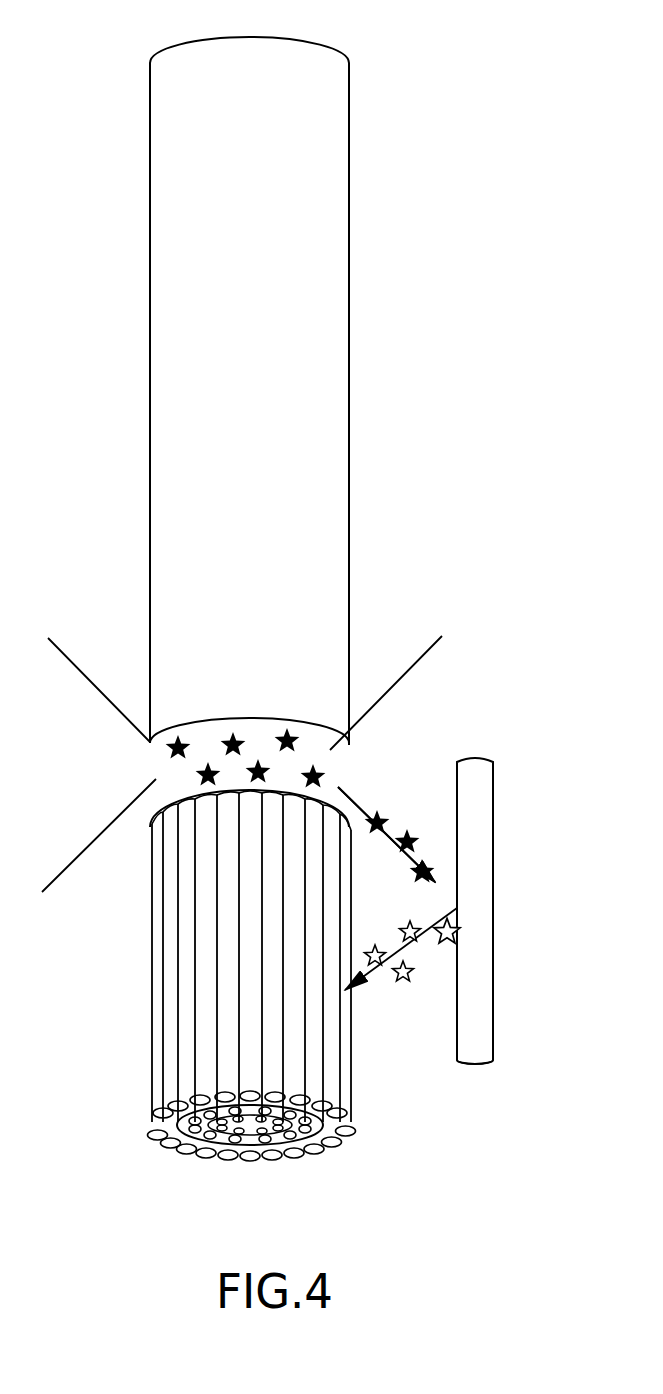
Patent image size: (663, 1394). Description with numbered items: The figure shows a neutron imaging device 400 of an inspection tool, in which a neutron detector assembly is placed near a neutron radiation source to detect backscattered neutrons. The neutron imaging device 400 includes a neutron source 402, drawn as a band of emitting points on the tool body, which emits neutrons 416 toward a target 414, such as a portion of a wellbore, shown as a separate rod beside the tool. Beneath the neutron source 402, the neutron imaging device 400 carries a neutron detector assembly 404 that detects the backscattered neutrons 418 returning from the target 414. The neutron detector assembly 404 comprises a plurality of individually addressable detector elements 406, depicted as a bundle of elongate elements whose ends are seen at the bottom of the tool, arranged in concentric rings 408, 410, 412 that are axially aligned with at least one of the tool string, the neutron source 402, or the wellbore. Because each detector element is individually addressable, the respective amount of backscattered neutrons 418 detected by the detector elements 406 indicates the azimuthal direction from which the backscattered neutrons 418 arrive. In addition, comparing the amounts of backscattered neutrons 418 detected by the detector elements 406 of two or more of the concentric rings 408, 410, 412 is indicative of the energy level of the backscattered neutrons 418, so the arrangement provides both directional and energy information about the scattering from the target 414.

The neutron imaging device 400 is at (530, 60).
The neutron source 402 is at (158, 772).
The neutron detector assembly 404 is at (150, 972).
The individually addressable detector elements 406 is at (156, 1134).
The concentric ring 408 is at (336, 1140).
The concentric ring 410 is at (287, 1146).
The concentric ring 412 is at (251, 1133).
The target 414 is at (494, 1007).
The neutrons 416 is at (402, 820).
The backscattered neutrons 418 is at (393, 997).